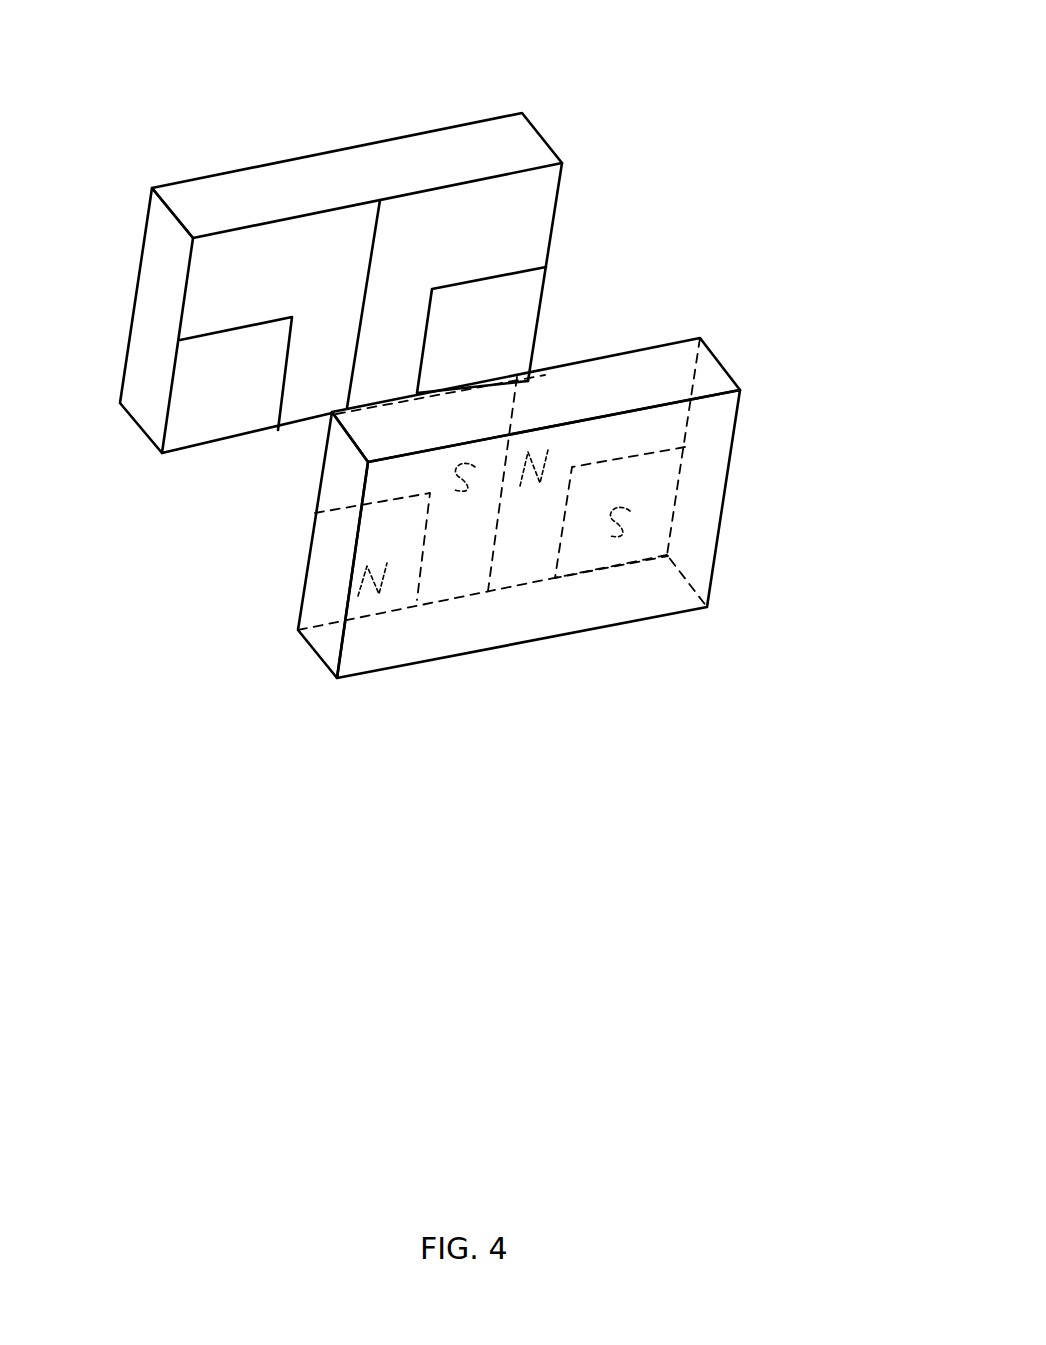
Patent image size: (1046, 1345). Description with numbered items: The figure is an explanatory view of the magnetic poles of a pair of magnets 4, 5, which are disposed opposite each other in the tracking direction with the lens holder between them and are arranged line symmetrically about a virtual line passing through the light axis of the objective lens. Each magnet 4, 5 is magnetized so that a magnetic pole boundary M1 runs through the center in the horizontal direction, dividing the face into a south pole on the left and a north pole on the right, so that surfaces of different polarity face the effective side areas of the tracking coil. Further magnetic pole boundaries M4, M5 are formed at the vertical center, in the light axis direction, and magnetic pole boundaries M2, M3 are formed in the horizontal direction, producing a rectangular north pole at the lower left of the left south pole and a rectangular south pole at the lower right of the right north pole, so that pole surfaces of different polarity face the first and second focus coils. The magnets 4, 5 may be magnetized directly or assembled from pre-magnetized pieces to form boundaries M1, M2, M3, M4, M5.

The magnet 4 is at (400, 150).
The magnet 5 is at (628, 368).
The magnetic pole boundary M1 is at (372, 248).
The magnetic pole boundary M2 is at (275, 400).
The magnetic pole boundary M3 is at (420, 372).
The magnetic pole boundary M4 is at (232, 333).
The magnetic pole boundary M5 is at (482, 281).